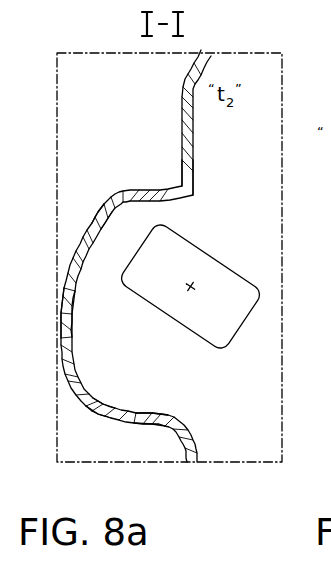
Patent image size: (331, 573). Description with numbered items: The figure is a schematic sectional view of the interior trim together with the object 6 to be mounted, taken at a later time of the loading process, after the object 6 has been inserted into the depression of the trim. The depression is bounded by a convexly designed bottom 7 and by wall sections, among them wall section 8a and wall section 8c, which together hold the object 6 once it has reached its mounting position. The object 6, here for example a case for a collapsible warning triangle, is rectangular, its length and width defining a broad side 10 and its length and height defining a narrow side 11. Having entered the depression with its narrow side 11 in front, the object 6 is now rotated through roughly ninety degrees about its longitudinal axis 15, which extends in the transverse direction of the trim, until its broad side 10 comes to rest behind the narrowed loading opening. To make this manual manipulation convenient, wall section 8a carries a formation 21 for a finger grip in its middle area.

The wall section 8c is at (134, 197).
The bottom 7 is at (67, 293).
The wall section 8a is at (110, 413).
The narrow side 11 is at (115, 243).
The formation for a finger grip 21 is at (153, 417).
The longitudinal axis 15 is at (173, 298).
The broad side 10 is at (188, 359).
The object 6 is at (238, 337).